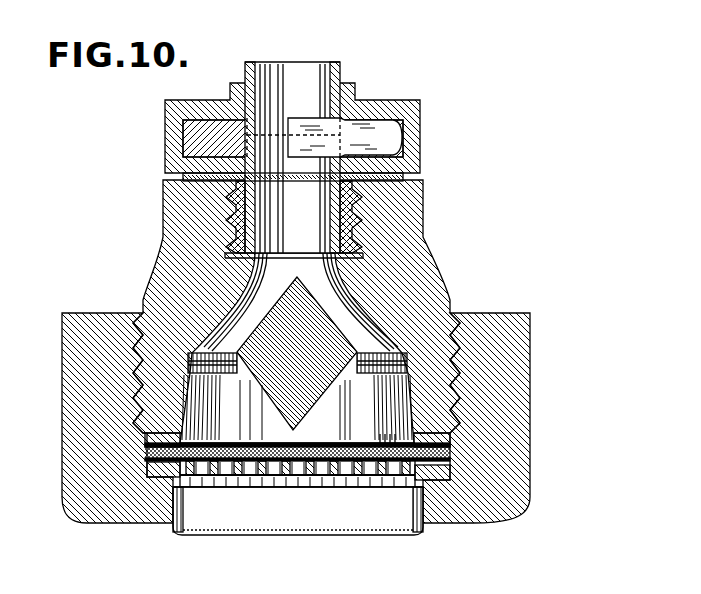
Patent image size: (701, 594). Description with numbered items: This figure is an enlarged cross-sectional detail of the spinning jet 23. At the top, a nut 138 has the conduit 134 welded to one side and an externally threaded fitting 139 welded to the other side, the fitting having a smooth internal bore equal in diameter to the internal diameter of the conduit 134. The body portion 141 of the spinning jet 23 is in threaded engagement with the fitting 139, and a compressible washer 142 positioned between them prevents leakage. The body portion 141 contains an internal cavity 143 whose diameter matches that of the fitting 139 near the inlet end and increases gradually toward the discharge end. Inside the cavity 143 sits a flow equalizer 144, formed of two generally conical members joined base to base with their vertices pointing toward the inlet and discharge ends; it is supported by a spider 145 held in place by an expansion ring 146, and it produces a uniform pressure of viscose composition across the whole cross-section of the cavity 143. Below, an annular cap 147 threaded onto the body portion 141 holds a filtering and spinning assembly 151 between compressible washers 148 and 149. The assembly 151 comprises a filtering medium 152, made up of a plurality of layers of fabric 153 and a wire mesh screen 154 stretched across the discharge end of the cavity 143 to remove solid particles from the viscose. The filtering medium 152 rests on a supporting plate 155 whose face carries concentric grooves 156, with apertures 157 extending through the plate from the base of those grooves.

The spinning jet 23 is at (324, 311).
The conduit 134 is at (333, 73).
The nut 138 is at (395, 137).
The externally threaded fitting 139 is at (357, 215).
The body portion 141 is at (450, 259).
The compressible washer 142 is at (400, 178).
The internal cavity 143 is at (377, 341).
The flow equalizer 144 is at (277, 398).
The spider 145 is at (371, 360).
The expansion ring 146 is at (401, 374).
The annular cap 147 is at (518, 505).
The compressible washer 148 is at (440, 478).
The compressible washer 149 is at (448, 443).
The filtering and spinning assembly 151 is at (227, 538).
The filtering medium 152 is at (330, 447).
The layers of fabric 153 is at (385, 443).
The wire mesh screen 154 is at (297, 484).
The supporting plate 155 is at (337, 489).
The concentric grooves 156 is at (401, 484).
The apertures 157 is at (270, 484).